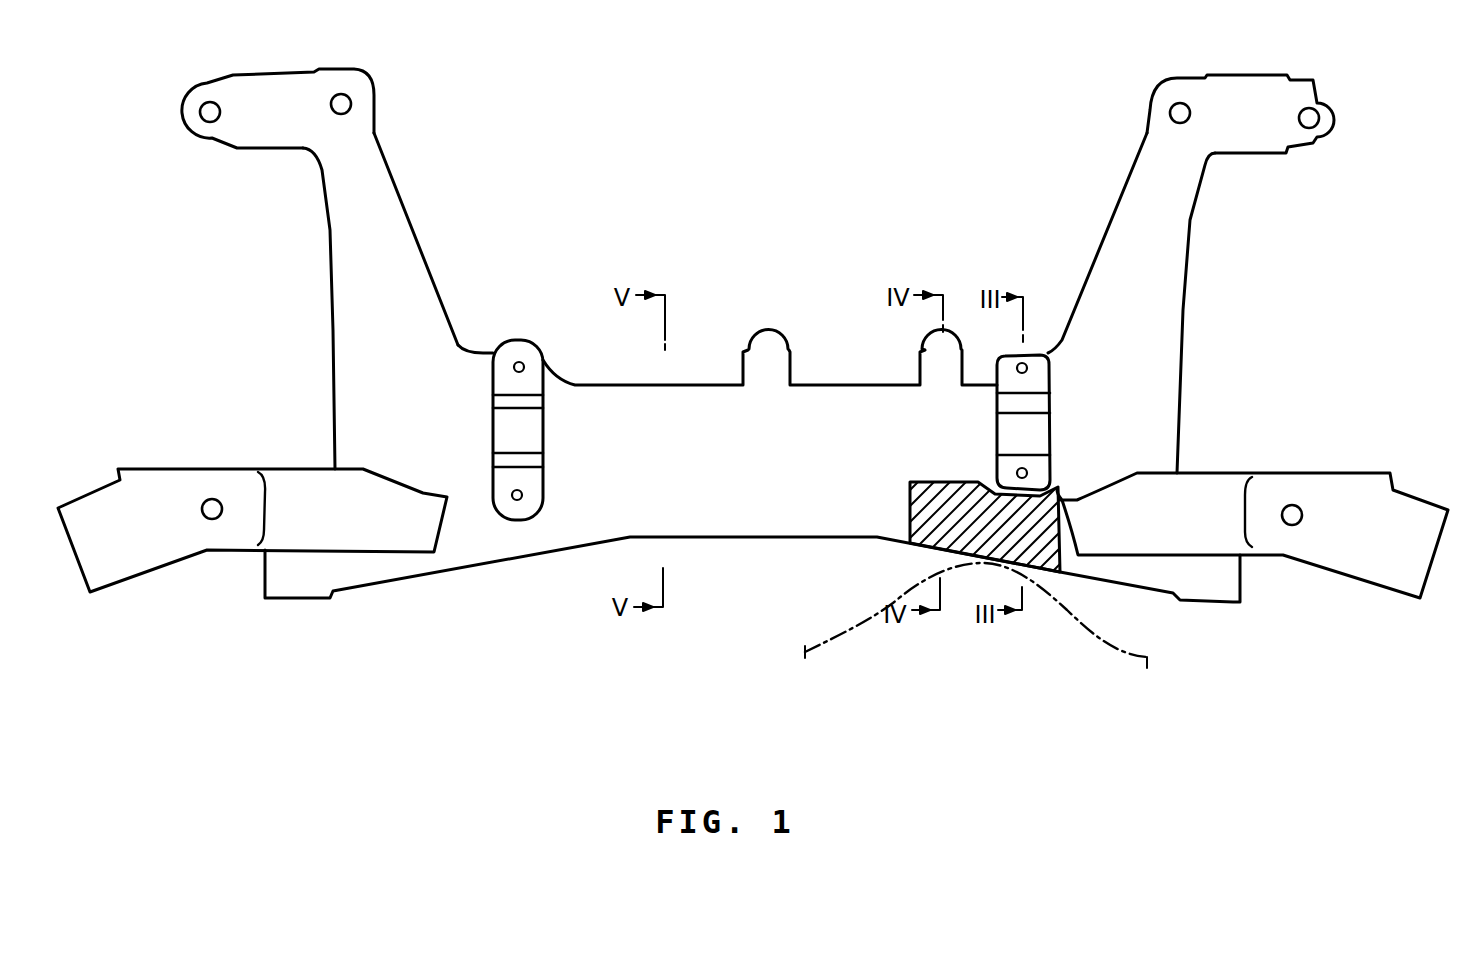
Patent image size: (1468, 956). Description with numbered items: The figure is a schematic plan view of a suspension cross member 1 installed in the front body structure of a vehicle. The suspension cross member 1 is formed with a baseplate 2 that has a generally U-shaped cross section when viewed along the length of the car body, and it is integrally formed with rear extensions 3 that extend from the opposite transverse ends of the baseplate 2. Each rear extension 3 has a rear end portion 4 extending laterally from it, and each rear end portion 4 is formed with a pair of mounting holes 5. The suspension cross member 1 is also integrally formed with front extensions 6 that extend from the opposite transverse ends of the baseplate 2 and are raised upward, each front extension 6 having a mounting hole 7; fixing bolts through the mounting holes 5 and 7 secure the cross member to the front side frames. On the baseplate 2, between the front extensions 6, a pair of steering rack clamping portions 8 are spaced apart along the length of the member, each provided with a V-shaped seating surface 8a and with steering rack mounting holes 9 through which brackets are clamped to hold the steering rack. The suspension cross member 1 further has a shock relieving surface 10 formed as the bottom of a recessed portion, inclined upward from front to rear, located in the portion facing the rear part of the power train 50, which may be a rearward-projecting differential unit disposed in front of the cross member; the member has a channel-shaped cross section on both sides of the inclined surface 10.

The suspension cross member 1 is at (733, 541).
The baseplate 2 is at (828, 505).
The rear extension 3 is at (343, 294).
The rear end portion 4 is at (288, 75).
The mounting hole 5 is at (337, 114).
The front extension 6 is at (235, 477).
The mounting hole 7 is at (210, 521).
The steering rack clamping portion 8 is at (501, 483).
The seating surface 8a is at (497, 424).
The steering rack mounting hole 9 is at (523, 490).
The inclined surface 10 is at (983, 563).
The power train 50 is at (1150, 657).